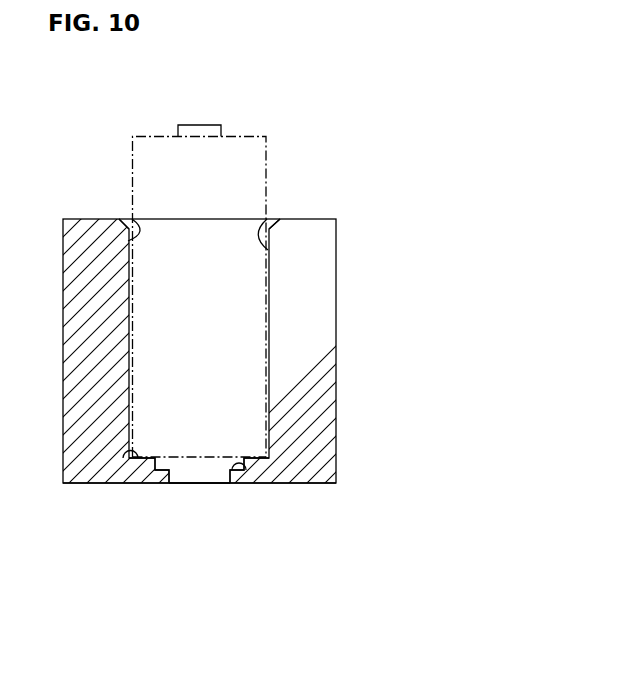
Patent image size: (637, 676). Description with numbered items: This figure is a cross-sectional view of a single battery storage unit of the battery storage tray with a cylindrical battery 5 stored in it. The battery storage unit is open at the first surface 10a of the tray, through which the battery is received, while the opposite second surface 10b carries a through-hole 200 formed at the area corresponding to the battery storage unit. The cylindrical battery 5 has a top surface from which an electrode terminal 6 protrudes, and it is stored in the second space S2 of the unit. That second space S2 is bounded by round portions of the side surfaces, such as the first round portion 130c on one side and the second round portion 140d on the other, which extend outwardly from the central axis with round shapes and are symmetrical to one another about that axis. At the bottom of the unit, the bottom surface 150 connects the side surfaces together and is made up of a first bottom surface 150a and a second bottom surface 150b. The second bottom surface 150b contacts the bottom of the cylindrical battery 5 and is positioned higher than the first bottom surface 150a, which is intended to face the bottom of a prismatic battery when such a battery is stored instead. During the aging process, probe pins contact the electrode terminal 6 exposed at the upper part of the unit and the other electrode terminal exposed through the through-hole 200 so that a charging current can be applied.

The cylindrical battery 5 is at (248, 142).
The electrode terminal 6 is at (198, 130).
The second space S2 is at (276, 188).
The first surface 10a is at (322, 221).
The second surface 10b is at (324, 484).
The first round portion 130c is at (132, 219).
The second round portion 140d is at (268, 219).
The bottom surface 150 is at (126, 562).
The first bottom surface 150a is at (249, 462).
The second bottom surface 150b is at (129, 458).
The through-hole 200 is at (192, 479).